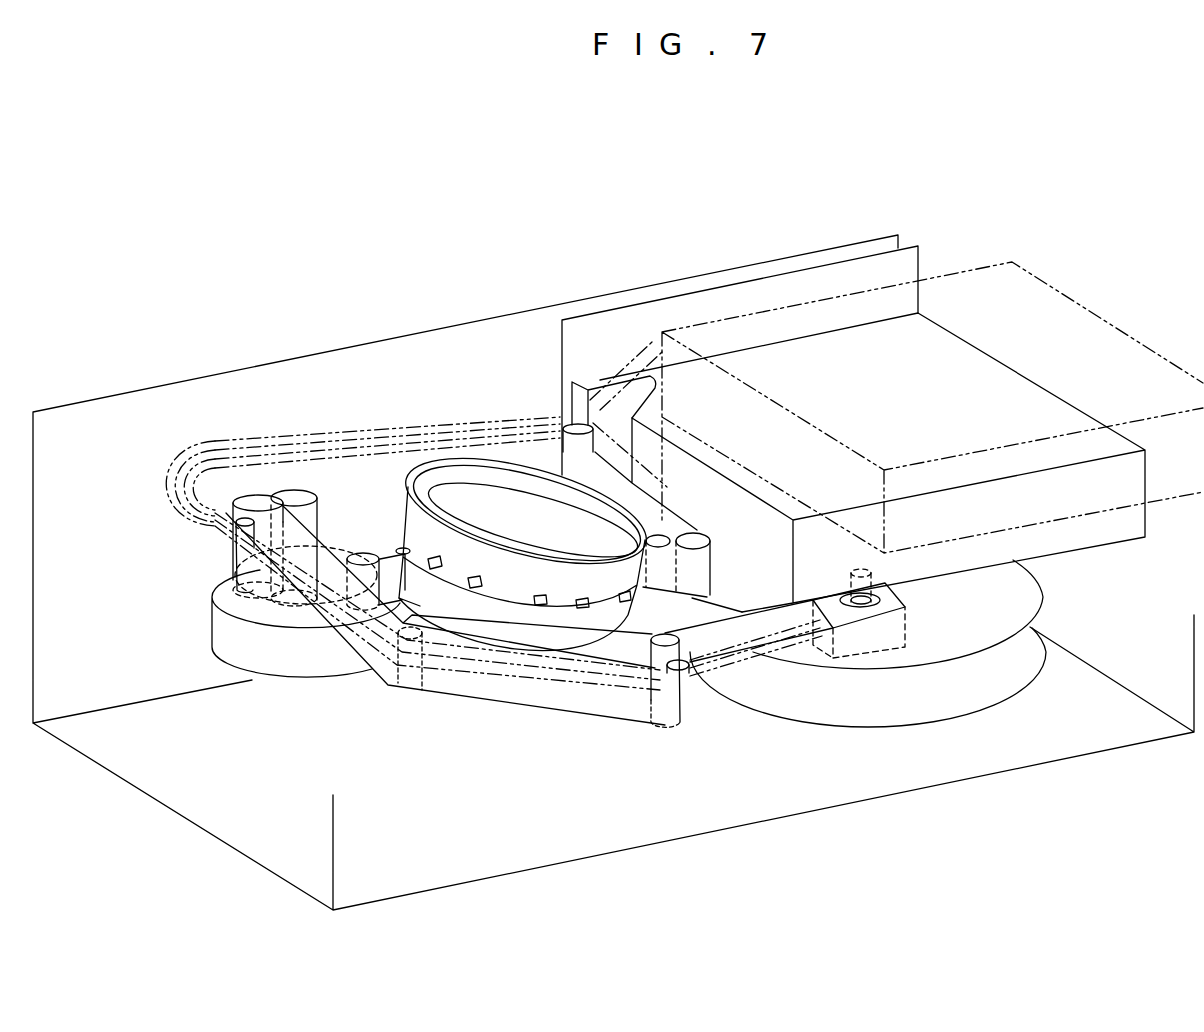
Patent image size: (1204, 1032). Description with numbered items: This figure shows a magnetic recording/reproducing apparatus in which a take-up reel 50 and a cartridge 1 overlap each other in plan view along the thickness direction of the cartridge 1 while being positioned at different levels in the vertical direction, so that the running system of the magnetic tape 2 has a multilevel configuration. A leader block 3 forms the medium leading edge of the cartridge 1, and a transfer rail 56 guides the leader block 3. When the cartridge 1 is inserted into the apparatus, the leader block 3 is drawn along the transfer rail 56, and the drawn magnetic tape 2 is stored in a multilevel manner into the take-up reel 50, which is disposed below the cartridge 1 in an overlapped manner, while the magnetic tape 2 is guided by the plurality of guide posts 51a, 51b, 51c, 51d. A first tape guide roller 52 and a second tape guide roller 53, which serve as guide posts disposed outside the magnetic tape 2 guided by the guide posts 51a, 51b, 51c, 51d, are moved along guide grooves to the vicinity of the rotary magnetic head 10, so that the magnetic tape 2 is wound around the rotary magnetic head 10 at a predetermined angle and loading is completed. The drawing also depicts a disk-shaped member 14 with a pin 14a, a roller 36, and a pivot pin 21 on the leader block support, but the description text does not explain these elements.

The cartridge 1 is at (985, 350).
The magnetic tape 2 is at (572, 690).
The leader block 3 is at (633, 427).
The rotary magnetic head 10 is at (450, 458).
The rotary disk 14 is at (292, 652).
The pin of rotary disk 14a is at (291, 492).
The pivot pin 21 is at (860, 578).
The roller 36 is at (240, 497).
The take-up reel 50 is at (985, 678).
The guide post 51a is at (570, 420).
The guide post 51b is at (235, 520).
The guide post 51c is at (422, 685).
The guide post 51d is at (662, 705).
The first tape guide roller 52 is at (694, 540).
The second tape guide roller 53 is at (362, 553).
The transfer rail 56 is at (360, 455).